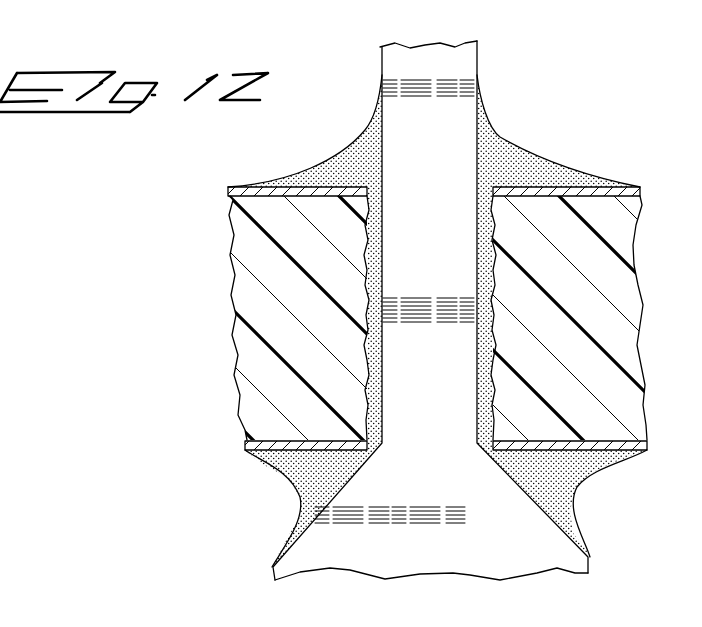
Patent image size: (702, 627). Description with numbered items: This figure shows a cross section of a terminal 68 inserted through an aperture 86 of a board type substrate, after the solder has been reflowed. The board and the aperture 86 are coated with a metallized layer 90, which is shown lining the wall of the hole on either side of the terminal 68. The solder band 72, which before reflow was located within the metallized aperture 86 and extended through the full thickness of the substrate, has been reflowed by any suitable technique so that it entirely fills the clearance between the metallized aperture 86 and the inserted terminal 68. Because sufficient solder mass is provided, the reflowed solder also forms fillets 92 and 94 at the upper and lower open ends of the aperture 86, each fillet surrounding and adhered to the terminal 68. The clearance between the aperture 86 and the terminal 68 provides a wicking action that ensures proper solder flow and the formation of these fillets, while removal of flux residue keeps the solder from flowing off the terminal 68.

The terminal 68 is at (450, 60).
The solder band 72 is at (495, 223).
The aperture 86 is at (372, 155).
The metallized layer 90 is at (367, 288).
The fillet 92 is at (492, 153).
The fillet 94 is at (570, 475).